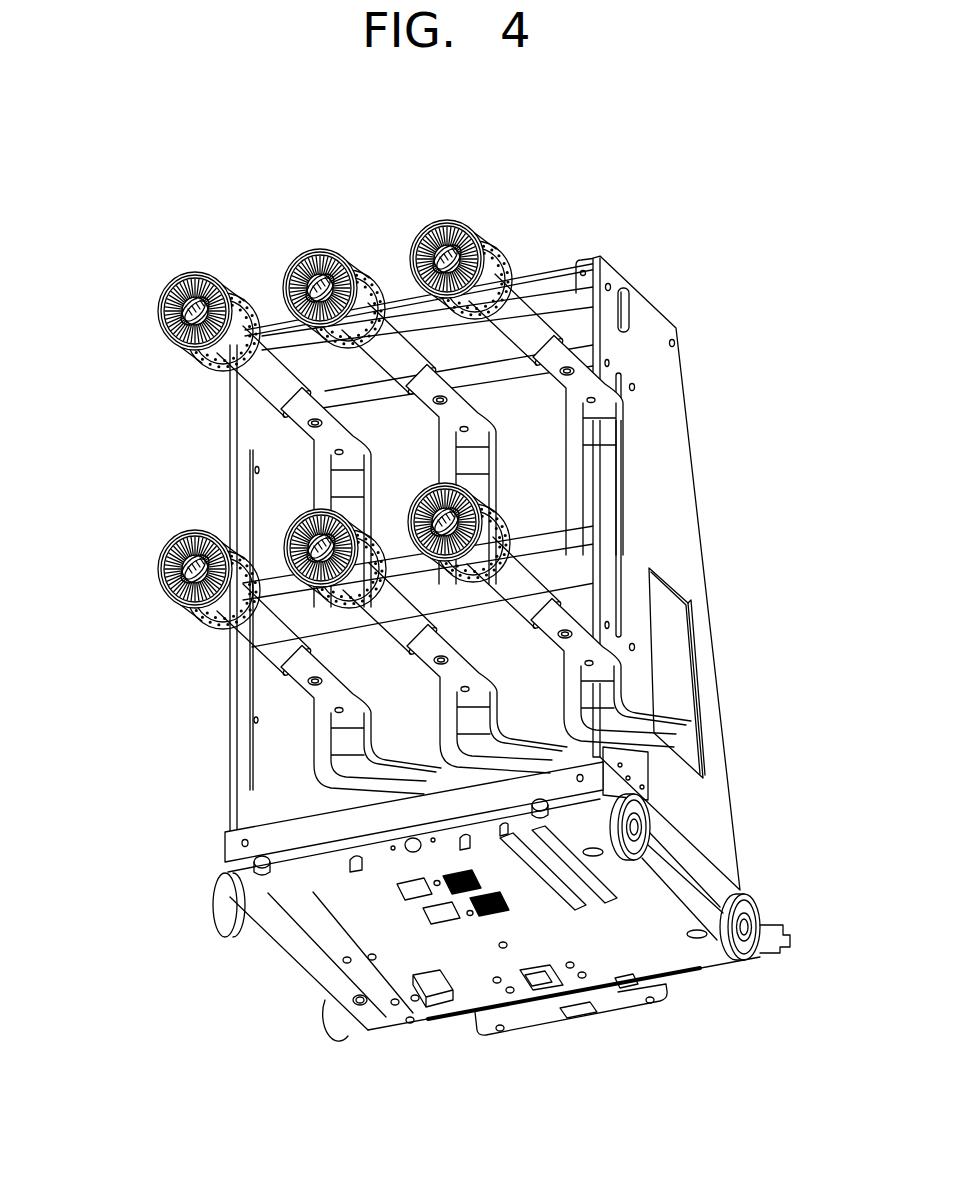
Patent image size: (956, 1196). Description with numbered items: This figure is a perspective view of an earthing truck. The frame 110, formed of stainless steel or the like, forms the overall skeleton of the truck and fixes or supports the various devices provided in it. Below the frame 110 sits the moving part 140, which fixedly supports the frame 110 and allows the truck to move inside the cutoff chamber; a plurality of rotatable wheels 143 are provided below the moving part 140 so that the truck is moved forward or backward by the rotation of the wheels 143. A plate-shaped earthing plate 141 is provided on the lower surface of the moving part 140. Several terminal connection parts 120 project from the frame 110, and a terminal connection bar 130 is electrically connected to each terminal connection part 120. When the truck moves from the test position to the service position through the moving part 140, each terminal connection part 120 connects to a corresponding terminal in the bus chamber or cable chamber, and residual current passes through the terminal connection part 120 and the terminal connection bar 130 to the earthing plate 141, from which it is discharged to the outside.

The frame 110 is at (552, 276).
The terminal connection part 120 is at (182, 343).
The terminal connection bar 130 is at (437, 738).
The moving part 140 is at (673, 869).
The earthing plate 141 is at (335, 946).
The wheel 143 is at (216, 912).